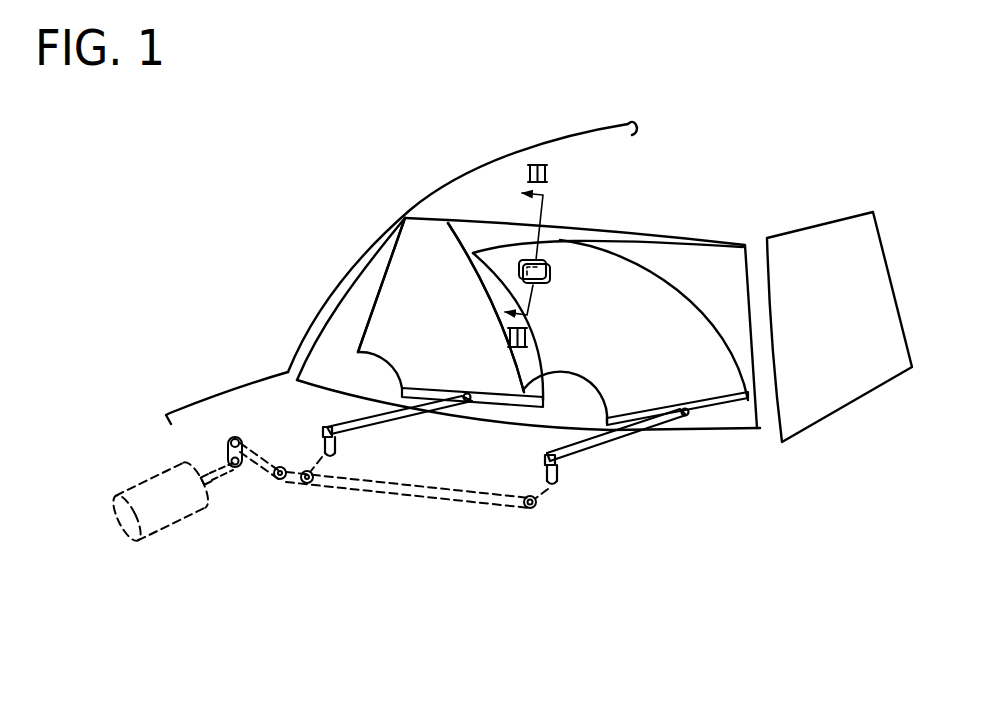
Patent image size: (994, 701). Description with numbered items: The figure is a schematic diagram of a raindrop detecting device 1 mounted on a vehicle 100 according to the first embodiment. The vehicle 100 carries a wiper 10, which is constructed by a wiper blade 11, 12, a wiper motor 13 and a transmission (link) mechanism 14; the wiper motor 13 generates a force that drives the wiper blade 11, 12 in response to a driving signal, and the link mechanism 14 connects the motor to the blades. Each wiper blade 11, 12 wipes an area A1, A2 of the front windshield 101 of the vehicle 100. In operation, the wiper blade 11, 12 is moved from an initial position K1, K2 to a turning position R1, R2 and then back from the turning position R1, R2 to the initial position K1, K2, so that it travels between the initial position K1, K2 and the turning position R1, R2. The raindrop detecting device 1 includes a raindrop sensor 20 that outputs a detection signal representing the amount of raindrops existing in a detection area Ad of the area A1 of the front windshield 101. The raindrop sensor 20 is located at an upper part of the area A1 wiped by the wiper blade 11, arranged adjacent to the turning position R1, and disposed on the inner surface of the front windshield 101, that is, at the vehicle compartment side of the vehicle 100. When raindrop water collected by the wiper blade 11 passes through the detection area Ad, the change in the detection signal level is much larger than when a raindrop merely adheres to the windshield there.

The vehicle 100 is at (320, 172).
The front windshield 101 is at (378, 253).
The raindrop detecting device 1 is at (512, 257).
The area A1 is at (650, 263).
The area A2 is at (452, 227).
The detection area Ad is at (543, 260).
The raindrop sensor 20 is at (553, 273).
The turning position R1 is at (480, 291).
The turning position R2 is at (368, 317).
The wiper 10 is at (428, 530).
The wiper blade 11 is at (700, 417).
The wiper blade 12 is at (493, 405).
The wiper motor 13 is at (180, 518).
The transmission (link) mechanism 14 is at (353, 492).
The initial position K1 is at (735, 418).
The initial position K2 is at (517, 413).